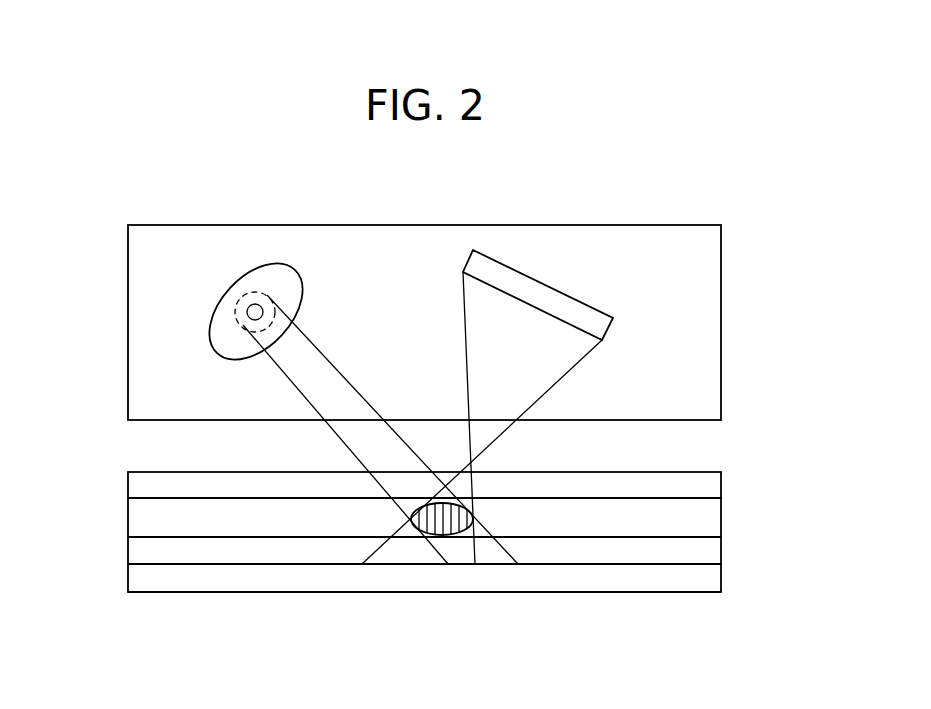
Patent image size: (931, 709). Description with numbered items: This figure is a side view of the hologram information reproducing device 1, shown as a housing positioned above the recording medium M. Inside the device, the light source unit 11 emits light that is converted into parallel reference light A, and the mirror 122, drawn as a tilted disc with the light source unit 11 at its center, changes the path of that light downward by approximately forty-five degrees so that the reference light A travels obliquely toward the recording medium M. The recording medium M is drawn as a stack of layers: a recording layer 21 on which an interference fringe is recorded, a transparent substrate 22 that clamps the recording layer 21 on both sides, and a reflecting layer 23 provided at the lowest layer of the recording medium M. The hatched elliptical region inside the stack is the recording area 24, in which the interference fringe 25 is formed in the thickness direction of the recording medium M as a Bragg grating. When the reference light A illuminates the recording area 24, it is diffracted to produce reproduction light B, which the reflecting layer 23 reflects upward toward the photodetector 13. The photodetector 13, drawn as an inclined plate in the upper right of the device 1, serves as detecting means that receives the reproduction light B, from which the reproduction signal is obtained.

The hologram information reproducing device 1 is at (721, 300).
The light source unit 11 is at (217, 348).
The photodetector 13 is at (583, 312).
The mirror 122 is at (283, 280).
The recording layer 21 is at (140, 520).
The transparent substrate 22 is at (140, 483).
The reflecting layer 23 is at (200, 578).
The recording area 24 is at (447, 535).
The interference fringe 25 is at (430, 520).
The reference light A is at (307, 360).
The reproduction light B is at (547, 360).
The recording medium M is at (759, 473).